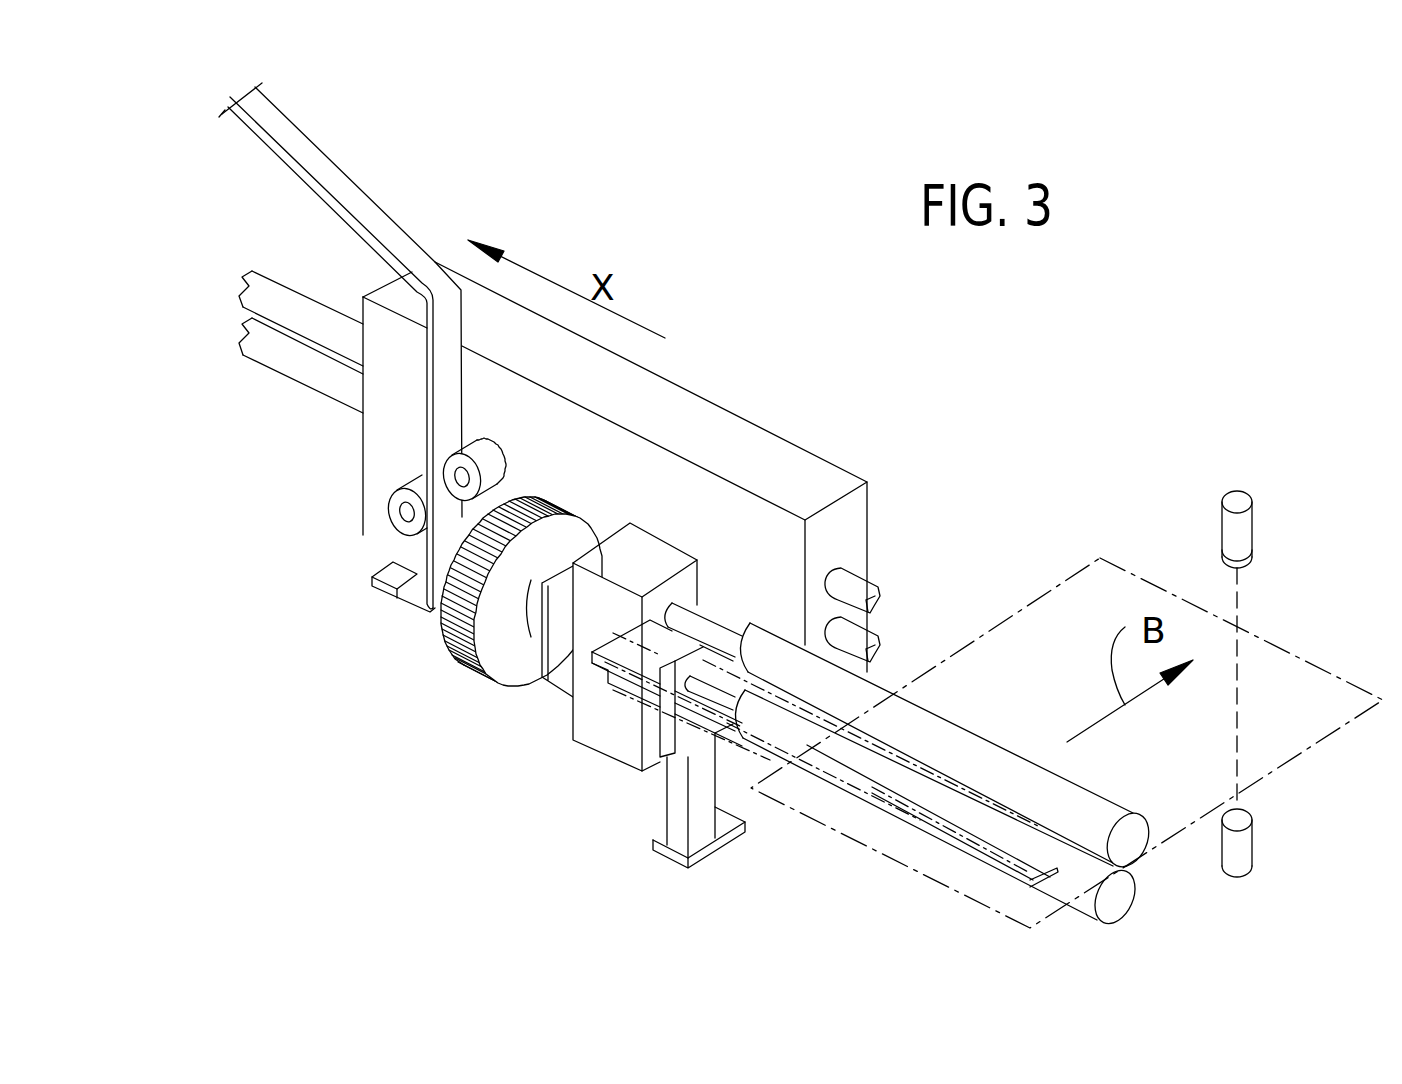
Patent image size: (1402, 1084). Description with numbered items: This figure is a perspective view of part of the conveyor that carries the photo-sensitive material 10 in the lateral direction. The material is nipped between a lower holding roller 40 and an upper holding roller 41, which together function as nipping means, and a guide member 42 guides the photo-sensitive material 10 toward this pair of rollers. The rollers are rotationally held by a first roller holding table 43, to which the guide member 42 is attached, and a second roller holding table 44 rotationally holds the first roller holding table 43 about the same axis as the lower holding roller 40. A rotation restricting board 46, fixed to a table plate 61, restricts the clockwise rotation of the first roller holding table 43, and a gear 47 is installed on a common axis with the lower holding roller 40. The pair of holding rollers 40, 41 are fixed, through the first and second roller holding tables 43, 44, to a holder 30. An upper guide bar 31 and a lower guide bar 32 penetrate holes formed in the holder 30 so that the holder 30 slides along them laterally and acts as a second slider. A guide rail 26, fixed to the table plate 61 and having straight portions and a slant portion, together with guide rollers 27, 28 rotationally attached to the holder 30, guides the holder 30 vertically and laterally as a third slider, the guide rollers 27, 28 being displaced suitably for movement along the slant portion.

The photo-sensitive material 10 is at (1052, 587).
The guide rail 26 is at (290, 133).
The guide roller 27 is at (476, 452).
The guide roller 28 is at (397, 527).
The holder 30 is at (794, 468).
The upper guide bar 31 is at (275, 292).
The lower guide bar 32 is at (273, 350).
The lower holding roller 40 is at (1087, 897).
The upper holding roller 41 is at (1093, 792).
The guide member 42 is at (1140, 906).
The first roller holding table 43 is at (637, 558).
The second roller holding table 44 is at (670, 760).
The rotation restricting board 46 is at (703, 830).
The gear 47 is at (490, 682).
The table plate 61 is at (738, 832).